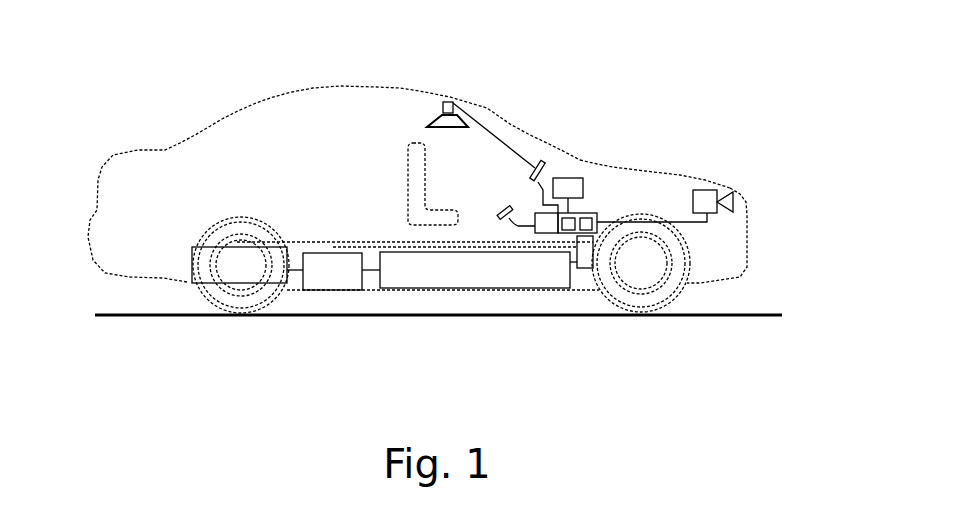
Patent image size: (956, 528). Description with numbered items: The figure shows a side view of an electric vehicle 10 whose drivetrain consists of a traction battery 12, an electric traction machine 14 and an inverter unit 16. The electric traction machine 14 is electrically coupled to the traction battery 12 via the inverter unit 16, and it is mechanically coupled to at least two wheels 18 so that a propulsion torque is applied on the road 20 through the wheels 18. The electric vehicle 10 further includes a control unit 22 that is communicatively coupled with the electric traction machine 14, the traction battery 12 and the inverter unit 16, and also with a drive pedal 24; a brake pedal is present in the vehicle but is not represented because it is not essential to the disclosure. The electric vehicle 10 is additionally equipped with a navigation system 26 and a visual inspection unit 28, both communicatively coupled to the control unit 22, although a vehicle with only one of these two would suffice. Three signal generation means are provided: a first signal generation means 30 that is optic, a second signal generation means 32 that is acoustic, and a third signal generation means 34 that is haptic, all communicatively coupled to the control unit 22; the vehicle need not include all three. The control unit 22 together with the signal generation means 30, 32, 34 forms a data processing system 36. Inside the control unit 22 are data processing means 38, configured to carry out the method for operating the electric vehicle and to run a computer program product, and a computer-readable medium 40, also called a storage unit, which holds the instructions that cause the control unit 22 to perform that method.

The electric vehicle 10 is at (598, 57).
The traction battery 12 is at (447, 282).
The electric traction machine 14 is at (275, 281).
The inverter unit 16 is at (337, 284).
The wheels 18 is at (242, 308).
The road 20 is at (770, 310).
The control unit 22 is at (583, 213).
The drive pedal 24 is at (519, 198).
The navigation system 26 is at (568, 177).
The visual inspection unit 28 is at (708, 190).
The first signal generation means 30 is at (561, 187).
The second signal generation means 32 is at (448, 101).
The third signal generation means 34 is at (546, 234).
The data processing system 36 is at (686, 150).
The data processing means 38 is at (594, 213).
The computer-readable medium 40 is at (583, 269).